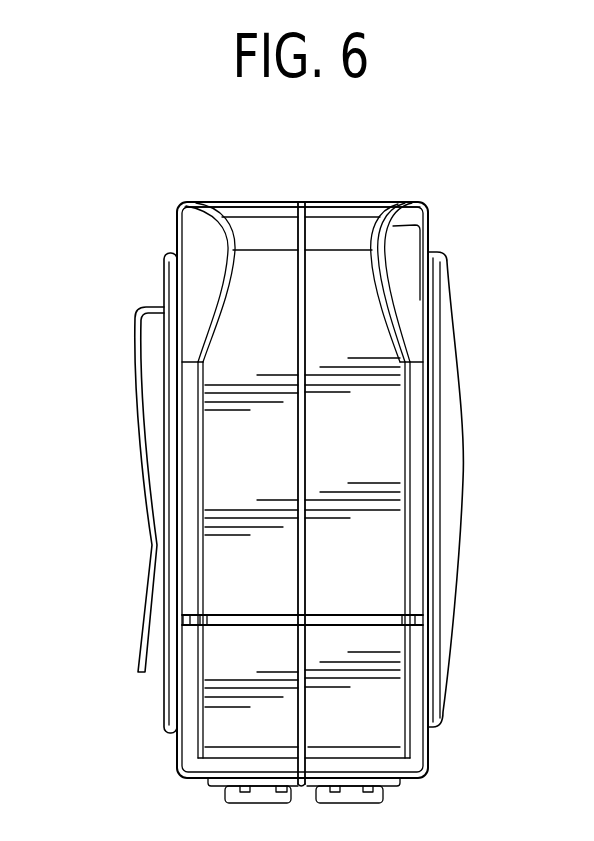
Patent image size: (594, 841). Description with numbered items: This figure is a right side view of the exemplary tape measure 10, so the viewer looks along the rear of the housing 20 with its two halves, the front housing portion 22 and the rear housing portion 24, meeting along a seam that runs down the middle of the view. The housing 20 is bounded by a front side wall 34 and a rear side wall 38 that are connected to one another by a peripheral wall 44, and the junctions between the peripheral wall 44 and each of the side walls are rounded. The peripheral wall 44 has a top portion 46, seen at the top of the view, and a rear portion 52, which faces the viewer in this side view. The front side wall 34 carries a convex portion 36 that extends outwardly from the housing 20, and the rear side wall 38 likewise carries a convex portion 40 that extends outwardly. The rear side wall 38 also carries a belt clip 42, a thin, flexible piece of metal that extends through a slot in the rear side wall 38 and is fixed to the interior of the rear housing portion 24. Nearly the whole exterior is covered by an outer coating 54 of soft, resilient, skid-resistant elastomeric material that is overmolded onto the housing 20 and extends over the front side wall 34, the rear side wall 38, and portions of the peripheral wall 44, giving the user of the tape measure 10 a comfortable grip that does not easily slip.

The tape measure 10 is at (436, 205).
The housing 20 is at (457, 334).
The front housing portion 22 is at (315, 200).
The rear housing portion 24 is at (221, 200).
The front side wall 34 is at (435, 750).
The convex portion 36 is at (463, 480).
The rear side wall 38 is at (177, 752).
The convex portion 40 is at (167, 708).
The belt clip 42 is at (131, 377).
The peripheral wall 44 is at (235, 200).
The top portion 46 is at (380, 197).
The rear portion 52 is at (400, 555).
The outer coating 54 is at (404, 248).